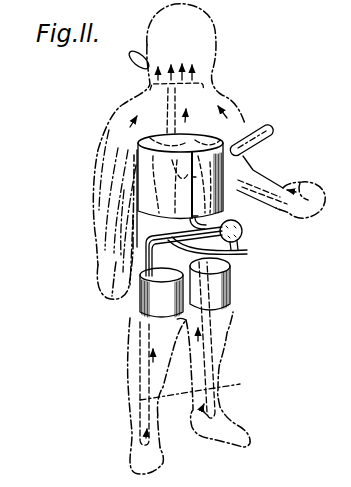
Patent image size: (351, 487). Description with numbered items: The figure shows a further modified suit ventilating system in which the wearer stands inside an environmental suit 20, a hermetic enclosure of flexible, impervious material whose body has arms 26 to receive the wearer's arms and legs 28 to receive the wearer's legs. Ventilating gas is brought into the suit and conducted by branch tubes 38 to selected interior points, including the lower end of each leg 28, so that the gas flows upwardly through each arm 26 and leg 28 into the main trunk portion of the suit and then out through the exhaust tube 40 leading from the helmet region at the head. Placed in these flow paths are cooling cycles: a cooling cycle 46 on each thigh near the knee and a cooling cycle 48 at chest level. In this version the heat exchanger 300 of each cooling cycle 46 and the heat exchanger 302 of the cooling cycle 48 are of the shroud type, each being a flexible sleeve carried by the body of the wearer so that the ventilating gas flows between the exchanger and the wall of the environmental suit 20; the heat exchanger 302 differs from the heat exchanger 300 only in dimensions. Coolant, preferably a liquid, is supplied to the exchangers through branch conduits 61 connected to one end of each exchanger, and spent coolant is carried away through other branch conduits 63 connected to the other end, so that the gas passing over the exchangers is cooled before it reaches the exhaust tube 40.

The environmental suit 20 is at (224, 90).
The arms 26 is at (108, 130).
The legs 28 is at (230, 348).
The branch tubes 38 is at (212, 380).
The exhaust tube 40 is at (134, 64).
The cooling cycle 46 is at (137, 324).
The cooling cycle 48 is at (127, 209).
The branch conduits 61 is at (247, 254).
The branch conduits 63 is at (242, 227).
The heat exchanger 300 is at (134, 303).
The heat exchanger 302 is at (150, 187).